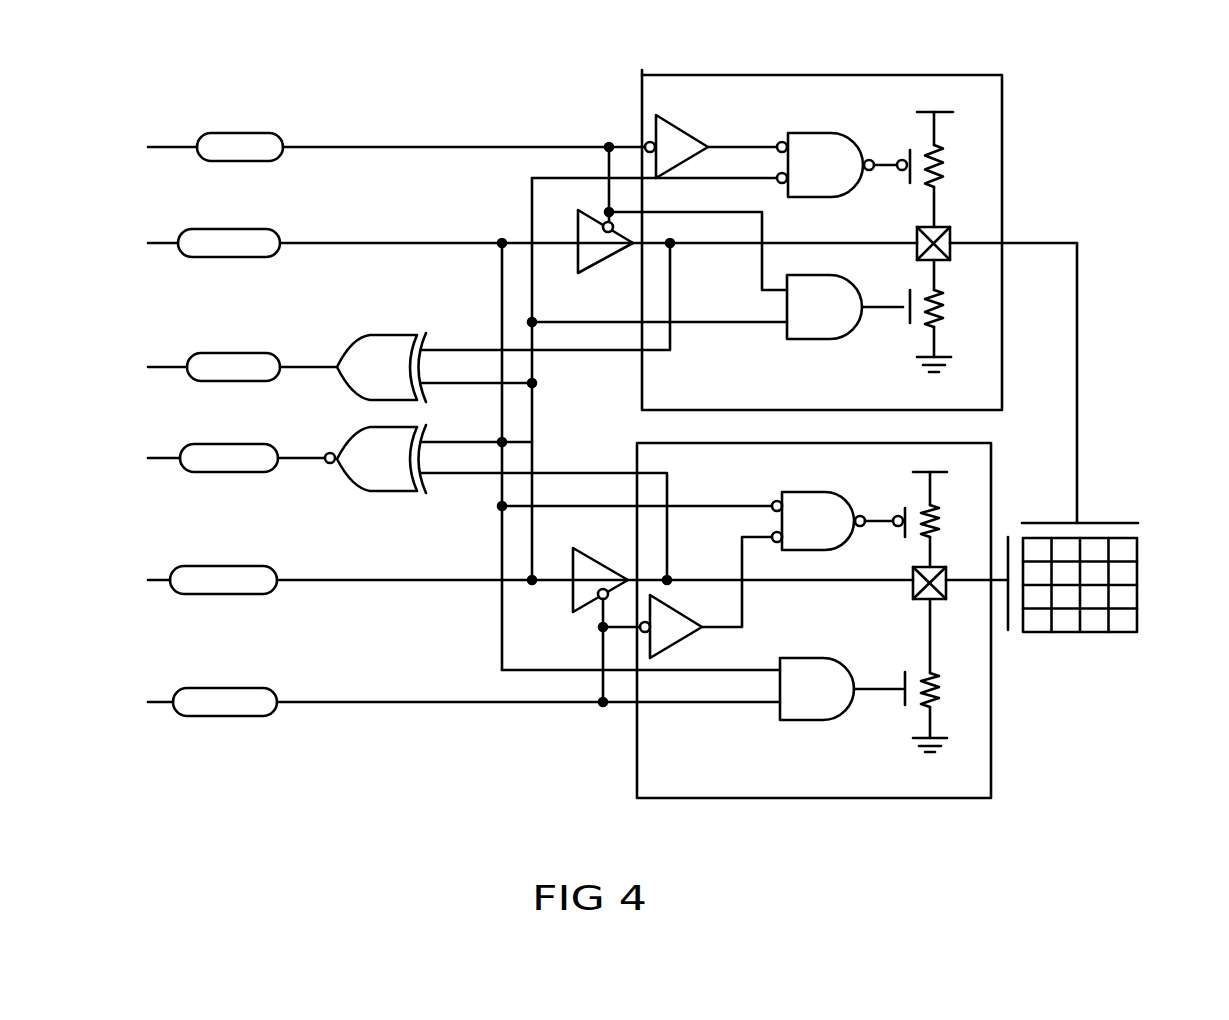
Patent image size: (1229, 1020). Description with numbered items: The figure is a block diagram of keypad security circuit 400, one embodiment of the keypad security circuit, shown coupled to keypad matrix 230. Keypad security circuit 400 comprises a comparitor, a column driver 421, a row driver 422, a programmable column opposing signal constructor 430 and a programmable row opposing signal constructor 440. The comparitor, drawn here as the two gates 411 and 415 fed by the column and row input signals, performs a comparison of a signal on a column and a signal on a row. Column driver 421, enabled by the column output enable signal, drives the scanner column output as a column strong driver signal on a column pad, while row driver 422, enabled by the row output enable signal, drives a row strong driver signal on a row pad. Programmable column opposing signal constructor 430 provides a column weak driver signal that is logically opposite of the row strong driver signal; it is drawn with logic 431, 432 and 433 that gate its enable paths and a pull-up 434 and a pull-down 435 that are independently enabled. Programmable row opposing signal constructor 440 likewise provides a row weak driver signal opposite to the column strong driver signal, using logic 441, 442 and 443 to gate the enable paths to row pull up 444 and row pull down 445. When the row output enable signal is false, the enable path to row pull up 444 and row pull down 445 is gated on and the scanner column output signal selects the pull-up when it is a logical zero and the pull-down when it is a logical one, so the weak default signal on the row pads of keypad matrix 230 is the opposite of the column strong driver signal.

The keypad security circuit 400 is at (622, 72).
The XOR gate 411 is at (503, 322).
The XOR gate 415 is at (496, 502).
The column driver 421 is at (605, 241).
The row driver 422 is at (600, 625).
The programmable column opposing signal constructor 430 is at (822, 240).
The inverting buffer 431 is at (711, 146).
The NAND gate 432 is at (843, 165).
The AND gate 433 is at (848, 307).
The pull-up resistor 434 is at (975, 148).
The pull-down resistor 435 is at (955, 314).
The programmable row opposing signal constructor 440 is at (797, 620).
The inverting buffer 441 is at (687, 597).
The NAND gate 442 is at (838, 521).
The AND gate 443 is at (842, 689).
The row pull up 444 is at (950, 520).
The row pull down 445 is at (948, 690).
The keypad matrix 230 is at (1146, 600).